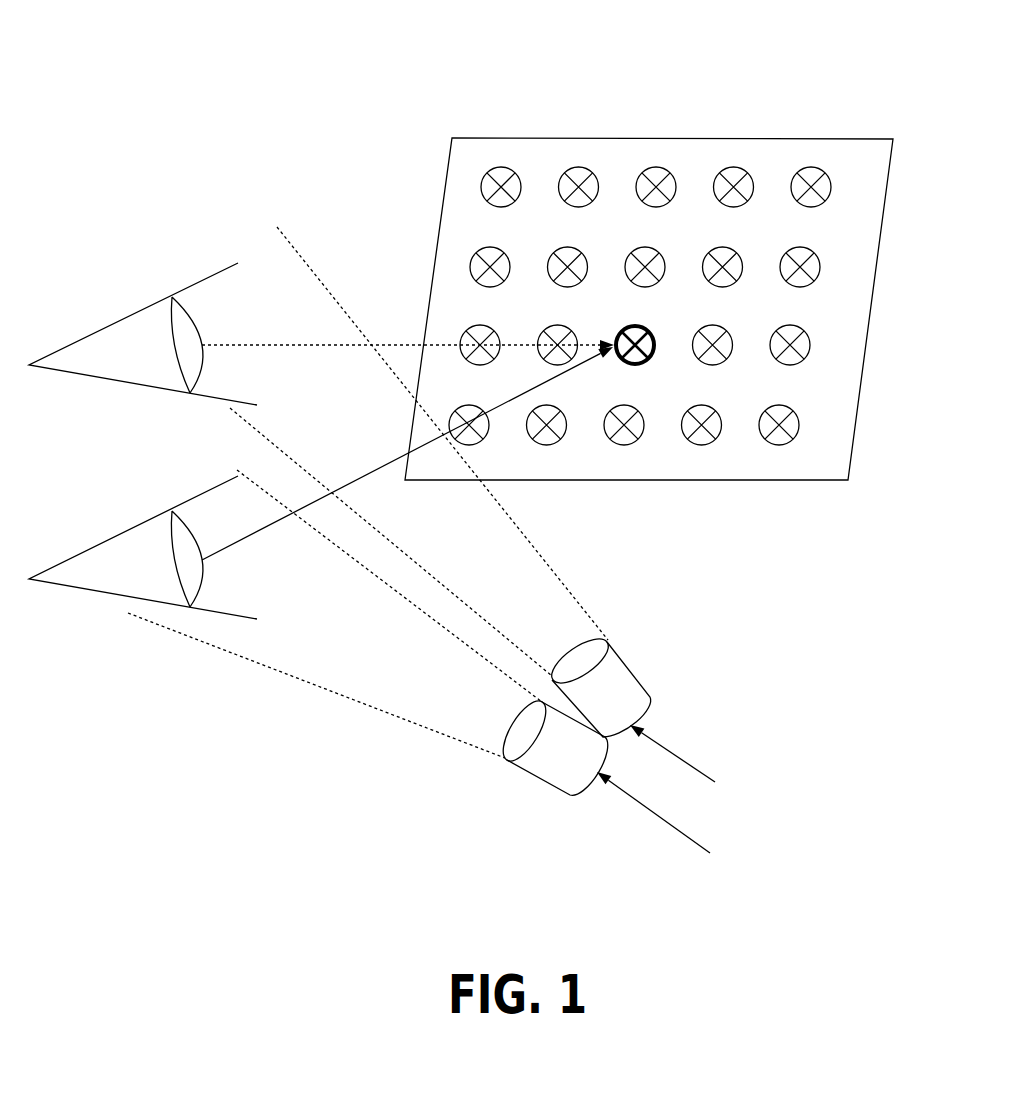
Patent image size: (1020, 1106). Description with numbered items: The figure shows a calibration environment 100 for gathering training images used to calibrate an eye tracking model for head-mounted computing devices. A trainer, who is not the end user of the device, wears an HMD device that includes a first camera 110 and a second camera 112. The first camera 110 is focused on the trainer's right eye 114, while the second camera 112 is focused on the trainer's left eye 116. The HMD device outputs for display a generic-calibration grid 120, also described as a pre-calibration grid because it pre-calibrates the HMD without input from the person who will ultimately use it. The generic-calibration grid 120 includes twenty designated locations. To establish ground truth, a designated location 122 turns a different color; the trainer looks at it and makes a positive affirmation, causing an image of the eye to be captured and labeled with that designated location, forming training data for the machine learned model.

The environment 100 is at (765, 69).
The first camera 110 is at (633, 672).
The second camera 112 is at (546, 783).
The right eye 114 is at (91, 376).
The left eye 116 is at (78, 588).
The generic-calibration grid 120 is at (449, 152).
The designated location 122 is at (637, 364).